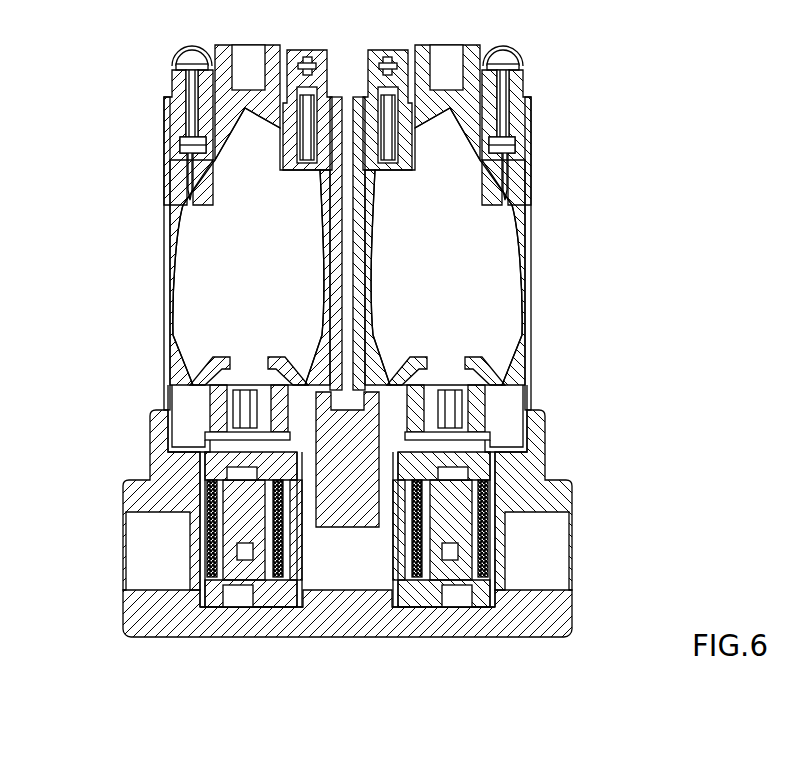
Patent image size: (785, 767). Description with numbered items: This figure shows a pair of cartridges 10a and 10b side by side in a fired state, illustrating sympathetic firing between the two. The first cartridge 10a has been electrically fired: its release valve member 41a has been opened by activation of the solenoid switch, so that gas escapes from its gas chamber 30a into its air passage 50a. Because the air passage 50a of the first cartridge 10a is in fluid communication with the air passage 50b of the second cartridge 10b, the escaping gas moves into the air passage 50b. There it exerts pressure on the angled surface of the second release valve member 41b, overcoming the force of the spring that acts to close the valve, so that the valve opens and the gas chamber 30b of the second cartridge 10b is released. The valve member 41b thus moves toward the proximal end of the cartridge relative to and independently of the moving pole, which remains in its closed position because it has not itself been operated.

The first cartridge 10a is at (137, 213).
The second cartridge 10b is at (560, 212).
The gas chamber 30a is at (283, 268).
The gas chamber 30b is at (464, 268).
The release valve member 41a is at (217, 421).
The second release valve member 41b is at (478, 420).
The air passage 50a is at (306, 505).
The air passage 50b is at (389, 505).